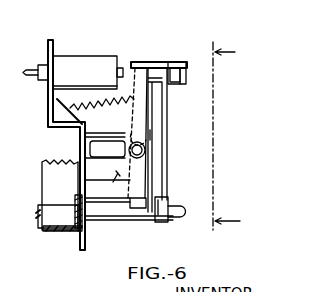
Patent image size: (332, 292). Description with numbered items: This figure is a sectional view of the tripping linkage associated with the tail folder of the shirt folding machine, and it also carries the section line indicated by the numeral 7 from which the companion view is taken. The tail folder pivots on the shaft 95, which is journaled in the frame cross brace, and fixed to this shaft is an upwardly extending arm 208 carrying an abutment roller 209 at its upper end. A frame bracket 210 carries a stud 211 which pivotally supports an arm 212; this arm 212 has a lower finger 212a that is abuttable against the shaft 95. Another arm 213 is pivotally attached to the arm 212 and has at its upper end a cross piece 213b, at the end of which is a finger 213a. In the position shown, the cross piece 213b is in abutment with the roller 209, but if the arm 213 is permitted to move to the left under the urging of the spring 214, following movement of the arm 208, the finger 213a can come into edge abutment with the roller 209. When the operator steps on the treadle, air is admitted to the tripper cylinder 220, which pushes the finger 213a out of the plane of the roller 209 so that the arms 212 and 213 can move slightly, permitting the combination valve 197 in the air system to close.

The tripper cylinder 220 is at (87, 62).
The spring 214 is at (70, 107).
The frame bracket 210 is at (68, 126).
The arm 212 is at (130, 114).
The lower finger 212a is at (142, 190).
The arm 213 is at (145, 102).
The finger 213a is at (183, 77).
The cross piece 213b is at (148, 62).
The abutment roller 209 is at (176, 82).
The upwardly extending arm 208 is at (142, 135).
The combination valve 197 is at (147, 148).
The stud 211 is at (113, 181).
The shaft 95 is at (127, 213).
The section line 7- 7 is at (232, 137).